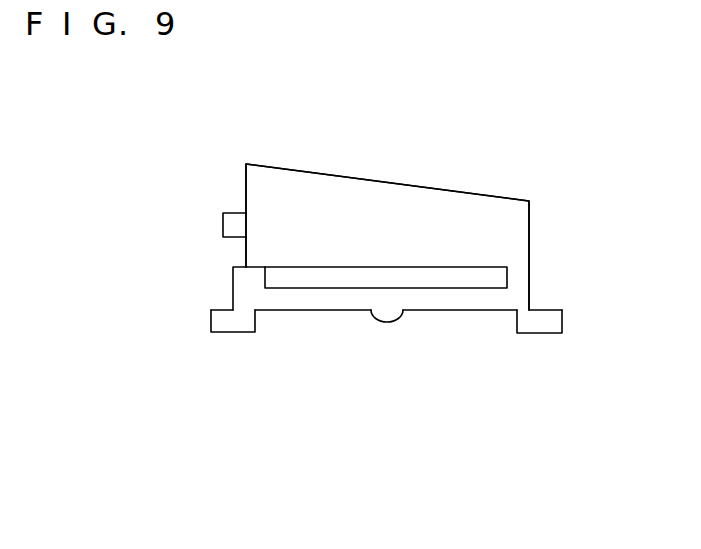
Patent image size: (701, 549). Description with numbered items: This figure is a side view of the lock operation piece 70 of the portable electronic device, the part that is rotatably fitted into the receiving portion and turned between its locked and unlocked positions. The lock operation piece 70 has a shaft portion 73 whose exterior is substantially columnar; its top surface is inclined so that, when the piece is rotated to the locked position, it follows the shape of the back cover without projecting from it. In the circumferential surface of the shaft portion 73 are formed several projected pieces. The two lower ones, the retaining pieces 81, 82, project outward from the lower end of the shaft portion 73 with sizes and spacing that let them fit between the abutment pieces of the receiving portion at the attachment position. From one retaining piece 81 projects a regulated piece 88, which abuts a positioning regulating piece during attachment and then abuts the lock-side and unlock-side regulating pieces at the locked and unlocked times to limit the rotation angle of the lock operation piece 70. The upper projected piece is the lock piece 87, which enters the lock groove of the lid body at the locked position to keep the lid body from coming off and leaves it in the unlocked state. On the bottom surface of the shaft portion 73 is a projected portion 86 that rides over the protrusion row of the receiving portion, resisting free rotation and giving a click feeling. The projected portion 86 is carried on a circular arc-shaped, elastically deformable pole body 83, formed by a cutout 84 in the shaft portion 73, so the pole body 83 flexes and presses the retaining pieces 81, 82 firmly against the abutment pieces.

The lock operation piece 70 is at (552, 130).
The shaft portion 73 is at (497, 243).
The retaining piece 81 is at (217, 318).
The retaining piece 82 is at (548, 321).
The pole body 83 is at (312, 295).
The cutout 84 is at (462, 279).
The projected portion 86 is at (388, 311).
The lock piece 87 is at (223, 225).
The regulated piece 88 is at (233, 278).